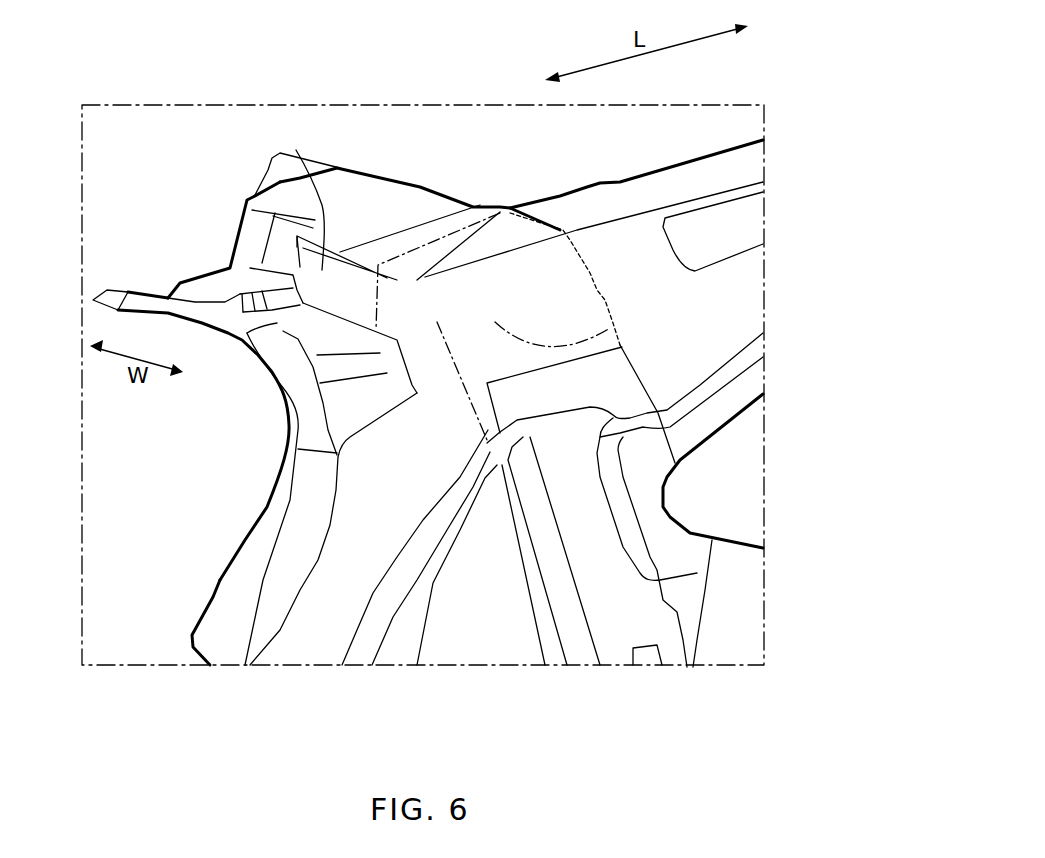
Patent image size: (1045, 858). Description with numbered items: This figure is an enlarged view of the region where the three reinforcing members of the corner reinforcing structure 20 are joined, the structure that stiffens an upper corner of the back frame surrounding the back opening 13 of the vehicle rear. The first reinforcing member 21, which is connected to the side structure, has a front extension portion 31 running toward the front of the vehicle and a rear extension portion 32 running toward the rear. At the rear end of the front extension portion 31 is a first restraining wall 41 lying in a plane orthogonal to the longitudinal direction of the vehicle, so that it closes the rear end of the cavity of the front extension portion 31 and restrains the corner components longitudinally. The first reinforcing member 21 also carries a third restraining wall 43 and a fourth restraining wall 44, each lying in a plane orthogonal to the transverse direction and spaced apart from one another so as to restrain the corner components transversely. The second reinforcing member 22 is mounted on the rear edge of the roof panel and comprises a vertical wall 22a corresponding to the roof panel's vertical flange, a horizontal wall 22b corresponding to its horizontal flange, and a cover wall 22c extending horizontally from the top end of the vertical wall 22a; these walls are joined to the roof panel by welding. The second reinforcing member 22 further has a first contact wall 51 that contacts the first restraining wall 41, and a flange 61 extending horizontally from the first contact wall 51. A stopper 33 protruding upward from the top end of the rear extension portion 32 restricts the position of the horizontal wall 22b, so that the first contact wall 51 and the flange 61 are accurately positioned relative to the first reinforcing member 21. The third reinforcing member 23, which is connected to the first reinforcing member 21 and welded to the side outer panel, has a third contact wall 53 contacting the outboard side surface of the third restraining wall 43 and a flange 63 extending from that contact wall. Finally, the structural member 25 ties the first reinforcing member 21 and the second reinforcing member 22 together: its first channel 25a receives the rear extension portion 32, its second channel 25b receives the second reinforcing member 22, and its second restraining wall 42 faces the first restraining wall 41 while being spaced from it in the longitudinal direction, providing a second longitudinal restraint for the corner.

The back opening 13 is at (161, 504).
The corner reinforcing structure 20 is at (150, 433).
The first reinforcing member 21 is at (691, 135).
The second reinforcing member 22 is at (386, 172).
The vertical wall 22a is at (293, 150).
The horizontal wall 22b is at (282, 328).
The cover wall 22c is at (347, 183).
The third reinforcing member 23 is at (712, 637).
The structural member 25 is at (273, 458).
The first channel 25a is at (216, 605).
The second channel 25b is at (218, 260).
The front extension portion 31 is at (620, 227).
The rear extension portion 32 is at (287, 652).
The stopper 33 is at (293, 370).
The first restraining wall 41 is at (433, 320).
The second restraining wall 42 is at (600, 293).
The third restraining wall 43 is at (450, 493).
The fourth restraining wall 44 is at (460, 235).
The first contact wall 51 is at (412, 298).
The third contact wall 53 is at (492, 452).
The flange 61 is at (510, 227).
The flange 63 is at (623, 378).